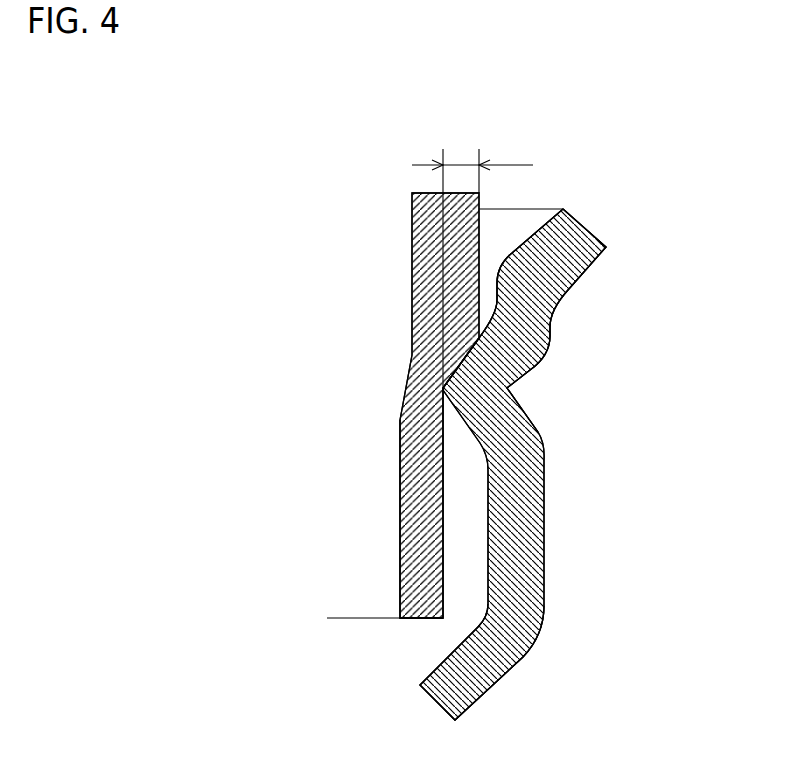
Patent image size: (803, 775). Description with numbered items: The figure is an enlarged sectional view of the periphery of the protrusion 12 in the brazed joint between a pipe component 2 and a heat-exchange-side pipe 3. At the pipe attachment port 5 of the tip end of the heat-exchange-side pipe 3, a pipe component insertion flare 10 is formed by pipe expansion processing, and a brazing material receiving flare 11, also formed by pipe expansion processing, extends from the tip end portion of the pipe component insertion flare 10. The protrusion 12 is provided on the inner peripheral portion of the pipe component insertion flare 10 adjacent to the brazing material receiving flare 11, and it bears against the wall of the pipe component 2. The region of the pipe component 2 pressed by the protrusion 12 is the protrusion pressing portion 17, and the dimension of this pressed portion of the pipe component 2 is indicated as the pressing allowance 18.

The pipe component 2 is at (420, 274).
The protrusion pressing portion 17 is at (427, 503).
The pressing allowance 18 is at (460, 168).
The pipe component insertion flare 10 is at (518, 510).
The brazing material receiving flare 11 is at (570, 268).
The protrusion 12 is at (507, 387).
The heat-exchange-side pipe 3 is at (512, 662).
The pipe attachment port 5 is at (626, 445).